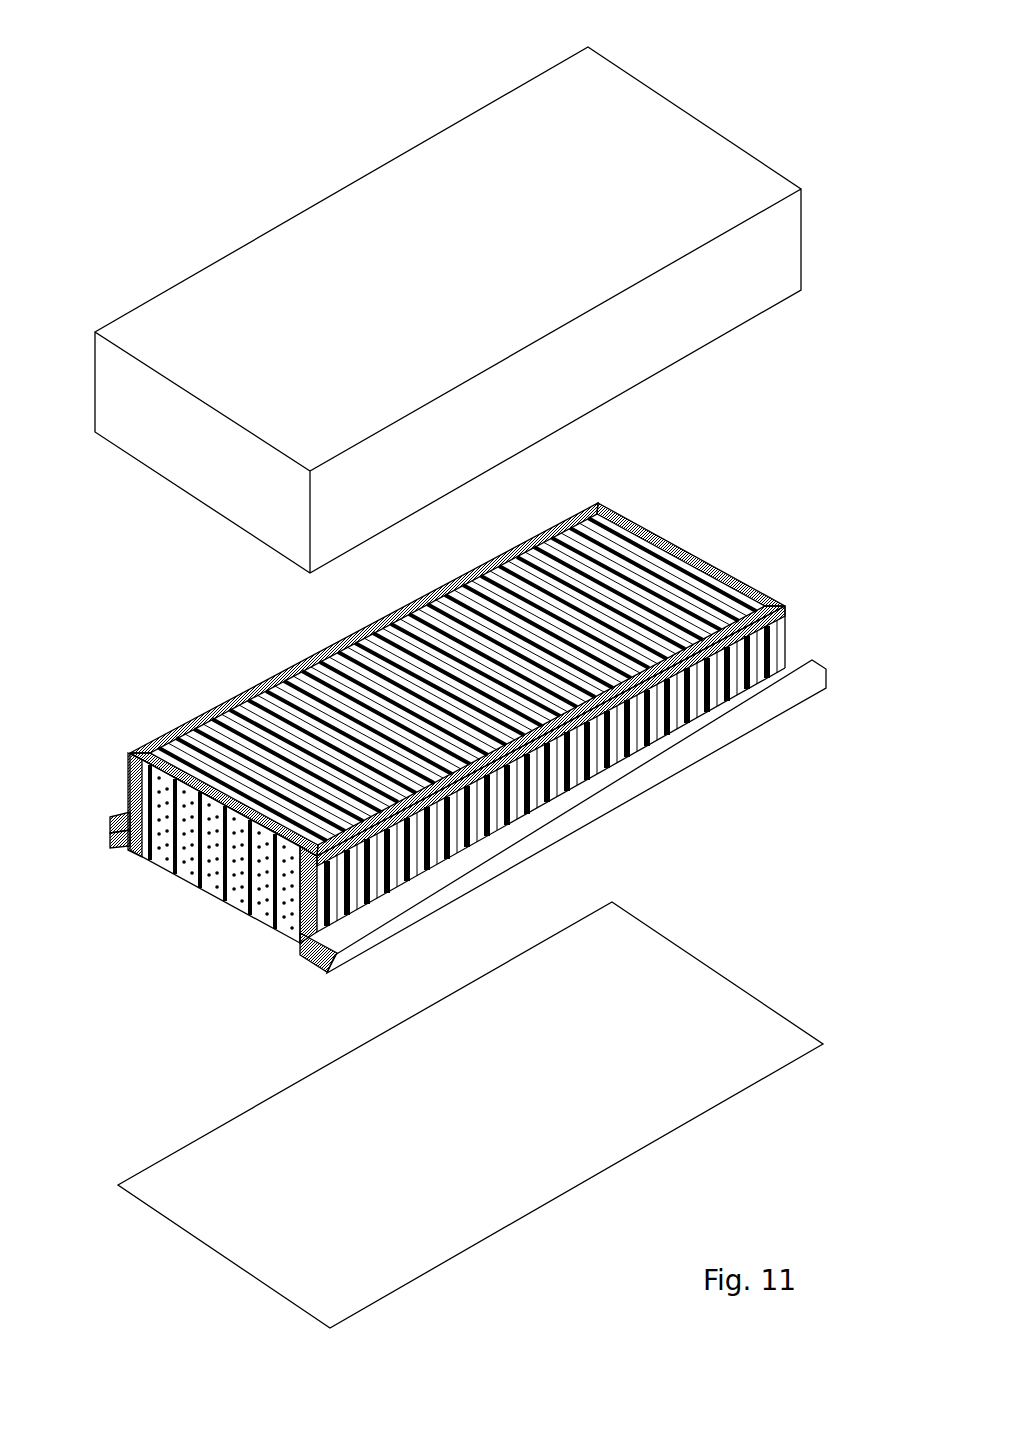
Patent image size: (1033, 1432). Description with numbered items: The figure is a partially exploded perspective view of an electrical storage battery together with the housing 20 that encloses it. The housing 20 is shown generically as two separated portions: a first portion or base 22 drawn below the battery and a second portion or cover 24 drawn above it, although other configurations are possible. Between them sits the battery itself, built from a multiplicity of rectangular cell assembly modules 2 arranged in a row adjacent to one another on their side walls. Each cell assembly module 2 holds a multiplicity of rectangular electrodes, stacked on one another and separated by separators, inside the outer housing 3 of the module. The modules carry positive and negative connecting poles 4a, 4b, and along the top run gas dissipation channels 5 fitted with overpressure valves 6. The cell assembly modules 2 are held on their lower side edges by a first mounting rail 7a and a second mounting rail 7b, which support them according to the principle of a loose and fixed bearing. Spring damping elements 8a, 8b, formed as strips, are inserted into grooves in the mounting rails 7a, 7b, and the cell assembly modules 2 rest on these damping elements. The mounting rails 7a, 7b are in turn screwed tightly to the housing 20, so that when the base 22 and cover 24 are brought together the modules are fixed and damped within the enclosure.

The housing 20 is at (661, 53).
The cover 24 is at (728, 154).
The base 22 is at (694, 990).
The cell assembly module 2 is at (183, 876).
The outer housing 3 is at (293, 937).
The positive connecting pole 4a is at (484, 562).
The negative connecting pole 4b is at (780, 607).
The gas dissipation channel 5 is at (656, 543).
The overpressure valve 6 is at (697, 564).
The first mounting rail 7a is at (120, 817).
The second mounting rail 7b is at (578, 835).
The spring damping element 8a is at (121, 855).
The spring damping element 8b is at (113, 838).